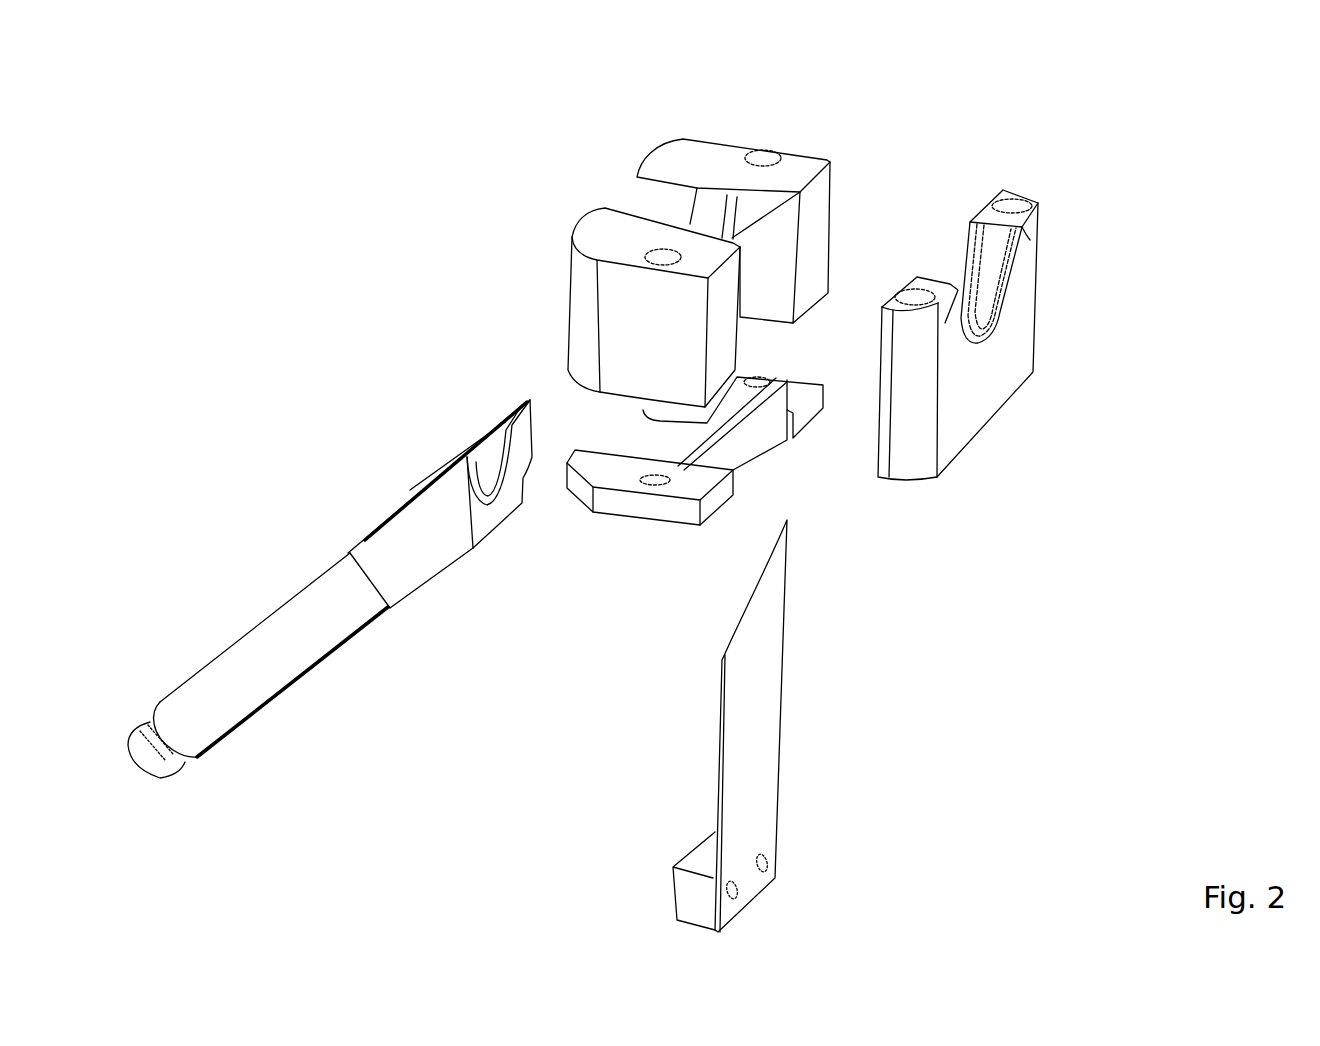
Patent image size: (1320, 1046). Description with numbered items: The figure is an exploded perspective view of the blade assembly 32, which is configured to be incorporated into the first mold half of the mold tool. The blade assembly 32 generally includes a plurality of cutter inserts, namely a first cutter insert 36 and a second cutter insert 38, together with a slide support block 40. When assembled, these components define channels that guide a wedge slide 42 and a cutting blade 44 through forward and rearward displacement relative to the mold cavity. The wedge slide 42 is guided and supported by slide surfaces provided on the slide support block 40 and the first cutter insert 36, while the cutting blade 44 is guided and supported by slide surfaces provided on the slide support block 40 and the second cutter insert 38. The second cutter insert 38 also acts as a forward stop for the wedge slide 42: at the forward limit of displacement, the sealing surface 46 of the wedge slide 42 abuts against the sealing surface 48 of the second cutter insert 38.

The blade assembly 32 is at (446, 122).
The first cutter insert 36 is at (717, 148).
The second cutter insert 38 is at (1023, 303).
The slide support block 40 is at (662, 510).
The wedge slide 42 is at (383, 538).
The cutting blade 44 is at (762, 717).
The sealing surface 46 is at (535, 432).
The sealing surface 48 is at (968, 232).